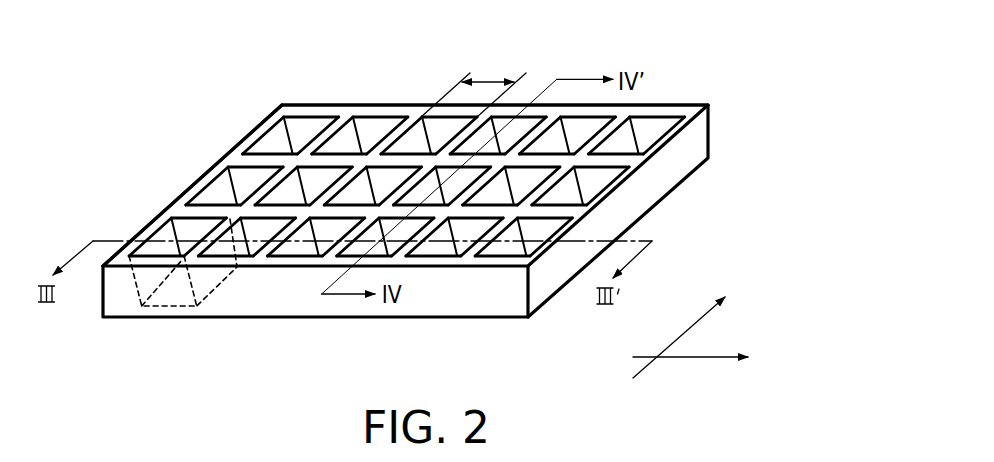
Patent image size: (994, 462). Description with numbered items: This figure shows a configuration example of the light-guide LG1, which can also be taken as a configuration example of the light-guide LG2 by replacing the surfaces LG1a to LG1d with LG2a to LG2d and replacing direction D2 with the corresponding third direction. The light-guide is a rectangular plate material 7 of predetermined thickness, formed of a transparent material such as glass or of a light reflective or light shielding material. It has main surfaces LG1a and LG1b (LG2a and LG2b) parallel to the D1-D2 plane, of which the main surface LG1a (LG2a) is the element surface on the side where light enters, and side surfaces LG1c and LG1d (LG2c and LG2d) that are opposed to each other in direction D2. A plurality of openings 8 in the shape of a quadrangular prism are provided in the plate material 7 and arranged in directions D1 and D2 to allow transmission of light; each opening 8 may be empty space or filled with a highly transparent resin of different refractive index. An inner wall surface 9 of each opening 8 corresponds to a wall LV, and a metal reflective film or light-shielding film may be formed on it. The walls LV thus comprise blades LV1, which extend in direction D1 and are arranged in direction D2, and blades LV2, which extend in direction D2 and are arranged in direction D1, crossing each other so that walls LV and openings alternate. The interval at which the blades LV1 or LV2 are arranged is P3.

The light-guide LG1 is at (442, 205).
The light-guide LG2 is at (442, 205).
The blade LV1 is at (407, 137).
The blade LV2 is at (240, 155).
The wall LV is at (393, 127).
The main surface LG1a is at (330, 329).
The main surface LG2a is at (485, 323).
The main surface LG1b is at (509, 61).
The main surface LG2b is at (686, 102).
The side surface LG1c is at (192, 172).
The side surface LG2c is at (247, 128).
The side surface LG1d is at (667, 211).
The side surface LG2d is at (689, 142).
The plate material 7 is at (455, 205).
The opening 8 is at (590, 187).
The inner wall surface 9 is at (620, 143).
The interval P3 is at (473, 83).
The direction D1 is at (686, 323).
The direction D2 is at (728, 358).